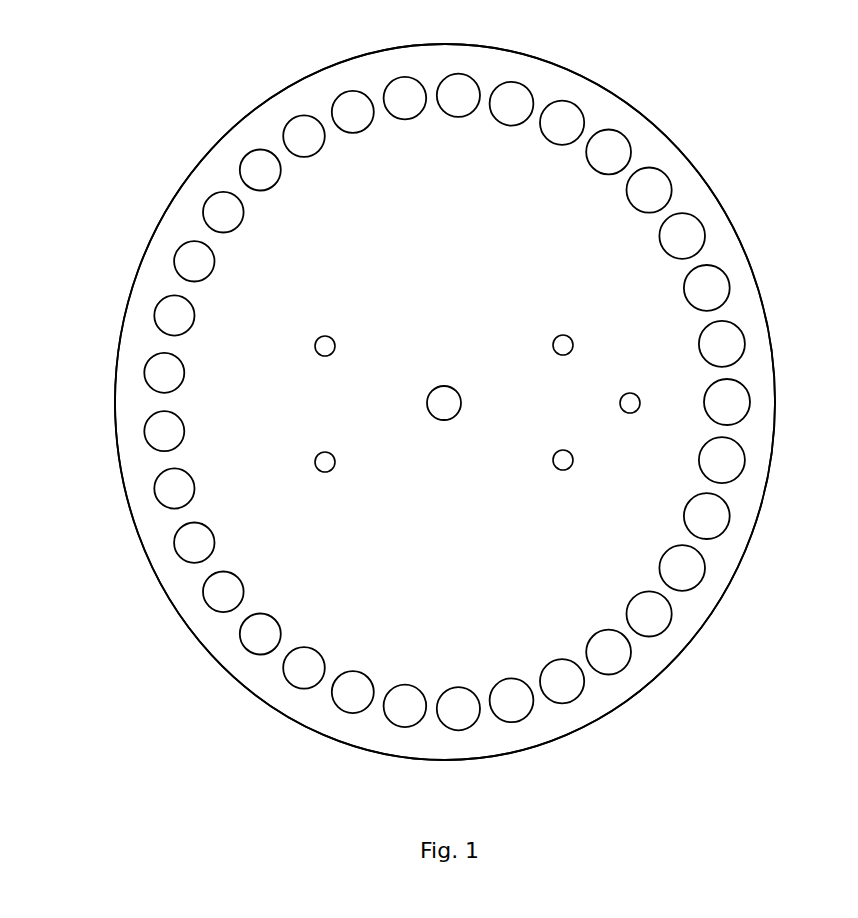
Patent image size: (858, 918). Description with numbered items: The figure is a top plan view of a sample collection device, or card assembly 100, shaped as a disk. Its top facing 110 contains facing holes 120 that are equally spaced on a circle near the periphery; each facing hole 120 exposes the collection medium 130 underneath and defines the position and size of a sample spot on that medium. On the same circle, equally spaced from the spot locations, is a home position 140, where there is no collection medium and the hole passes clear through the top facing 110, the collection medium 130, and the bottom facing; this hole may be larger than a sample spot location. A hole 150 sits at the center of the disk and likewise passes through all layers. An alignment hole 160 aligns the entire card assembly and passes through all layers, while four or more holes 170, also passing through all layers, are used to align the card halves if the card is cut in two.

The sample collection device 100 is at (445, 402).
The top facing 110 is at (445, 402).
The facing holes 120 is at (753, 263).
The collection medium 130 is at (691, 159).
The home position 140 is at (775, 426).
The hole 150 is at (450, 387).
The alignment hole 160 is at (731, 376).
The holes 170 is at (193, 303).